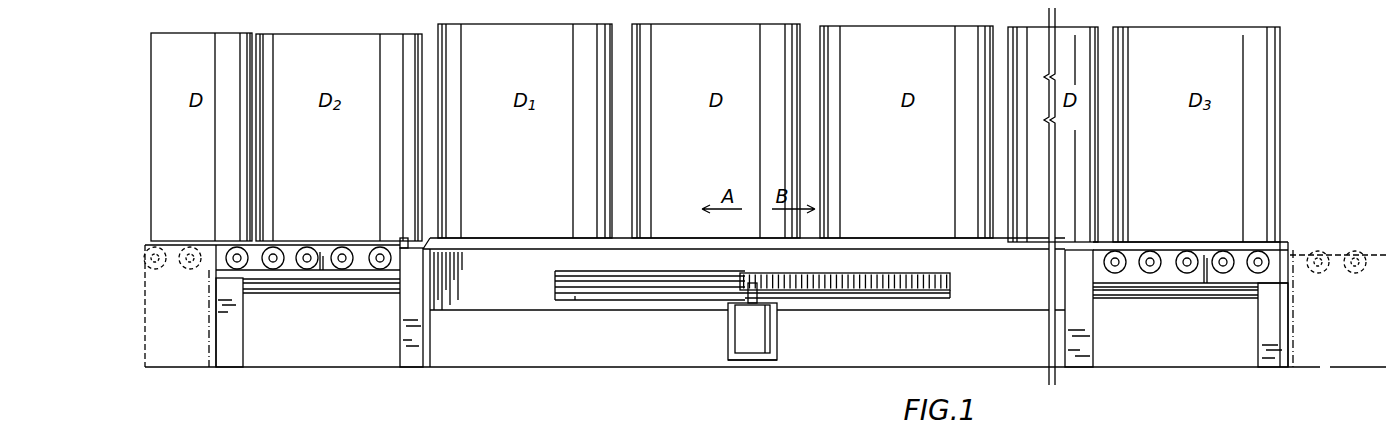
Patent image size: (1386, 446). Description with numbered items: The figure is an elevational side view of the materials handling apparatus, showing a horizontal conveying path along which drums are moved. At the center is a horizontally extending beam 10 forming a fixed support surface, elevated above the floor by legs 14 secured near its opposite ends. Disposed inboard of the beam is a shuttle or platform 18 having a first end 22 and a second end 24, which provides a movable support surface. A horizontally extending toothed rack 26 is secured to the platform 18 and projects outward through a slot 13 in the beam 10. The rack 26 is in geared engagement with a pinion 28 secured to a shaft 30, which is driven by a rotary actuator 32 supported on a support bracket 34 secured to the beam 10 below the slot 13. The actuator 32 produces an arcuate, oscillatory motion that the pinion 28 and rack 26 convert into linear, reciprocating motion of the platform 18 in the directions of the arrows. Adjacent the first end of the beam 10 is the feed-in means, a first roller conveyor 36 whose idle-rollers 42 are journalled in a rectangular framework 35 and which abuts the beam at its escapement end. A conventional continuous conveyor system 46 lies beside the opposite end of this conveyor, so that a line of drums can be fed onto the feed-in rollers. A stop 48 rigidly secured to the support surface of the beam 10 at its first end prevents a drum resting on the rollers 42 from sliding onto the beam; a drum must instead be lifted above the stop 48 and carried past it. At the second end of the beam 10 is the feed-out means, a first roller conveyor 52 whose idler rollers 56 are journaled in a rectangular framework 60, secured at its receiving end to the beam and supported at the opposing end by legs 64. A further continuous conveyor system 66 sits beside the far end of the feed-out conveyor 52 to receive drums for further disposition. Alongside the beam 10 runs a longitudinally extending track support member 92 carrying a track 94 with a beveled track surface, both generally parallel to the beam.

The beam 10 is at (997, 290).
The slot 13 is at (580, 300).
The legs 14 is at (420, 340).
The shuttle or platform 18 is at (907, 234).
The first end 22 is at (440, 246).
The second end 24 is at (1283, 247).
The toothed rack 26 is at (900, 287).
The pinion 28 is at (738, 288).
The shaft 30 is at (768, 292).
The rotary actuator 32 is at (738, 338).
The support bracket 34 is at (776, 362).
The rectangular framework 35 is at (224, 272).
The first roller conveyor 36 is at (293, 270).
The idle-rollers 42 is at (306, 263).
The continuous conveyor system 46 is at (173, 282).
The stop 48 is at (404, 243).
The first roller conveyor 52 is at (1169, 230).
The idler rollers 56 is at (1190, 254).
The rectangular framework 60 is at (1167, 276).
The legs 64 is at (1277, 362).
The continuous conveyor system 66 is at (1348, 240).
The track support member 92 is at (335, 290).
The track 94 is at (381, 292).